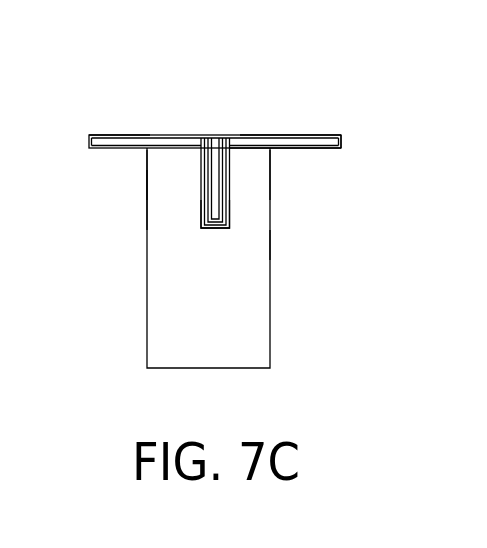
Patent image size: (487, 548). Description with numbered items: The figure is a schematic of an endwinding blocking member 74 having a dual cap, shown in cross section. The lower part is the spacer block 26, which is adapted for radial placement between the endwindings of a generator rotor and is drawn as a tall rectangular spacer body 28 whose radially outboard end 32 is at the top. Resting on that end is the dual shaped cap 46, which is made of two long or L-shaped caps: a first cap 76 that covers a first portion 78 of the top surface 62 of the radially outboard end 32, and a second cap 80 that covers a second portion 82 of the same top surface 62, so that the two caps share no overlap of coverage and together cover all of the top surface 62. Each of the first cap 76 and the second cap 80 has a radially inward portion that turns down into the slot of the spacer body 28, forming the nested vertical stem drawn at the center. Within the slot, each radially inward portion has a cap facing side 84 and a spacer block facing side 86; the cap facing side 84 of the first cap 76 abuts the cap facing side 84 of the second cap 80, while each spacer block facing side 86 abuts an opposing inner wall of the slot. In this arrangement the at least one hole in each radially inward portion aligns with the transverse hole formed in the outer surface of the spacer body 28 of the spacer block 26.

The spacer block 26 is at (315, 242).
The spacer body 28 is at (270, 328).
The radially outboard end 32 is at (160, 203).
The dual shaped cap 46 is at (127, 137).
The top surface 62 is at (272, 152).
The endwinding blocking member 74 is at (377, 128).
The first cap 76 is at (95, 105).
The first portion 78 is at (160, 170).
The second cap 80 is at (285, 125).
The second portion 82 is at (260, 182).
The cap facing side 84 is at (213, 222).
The spacer block facing side 86 is at (208, 210).